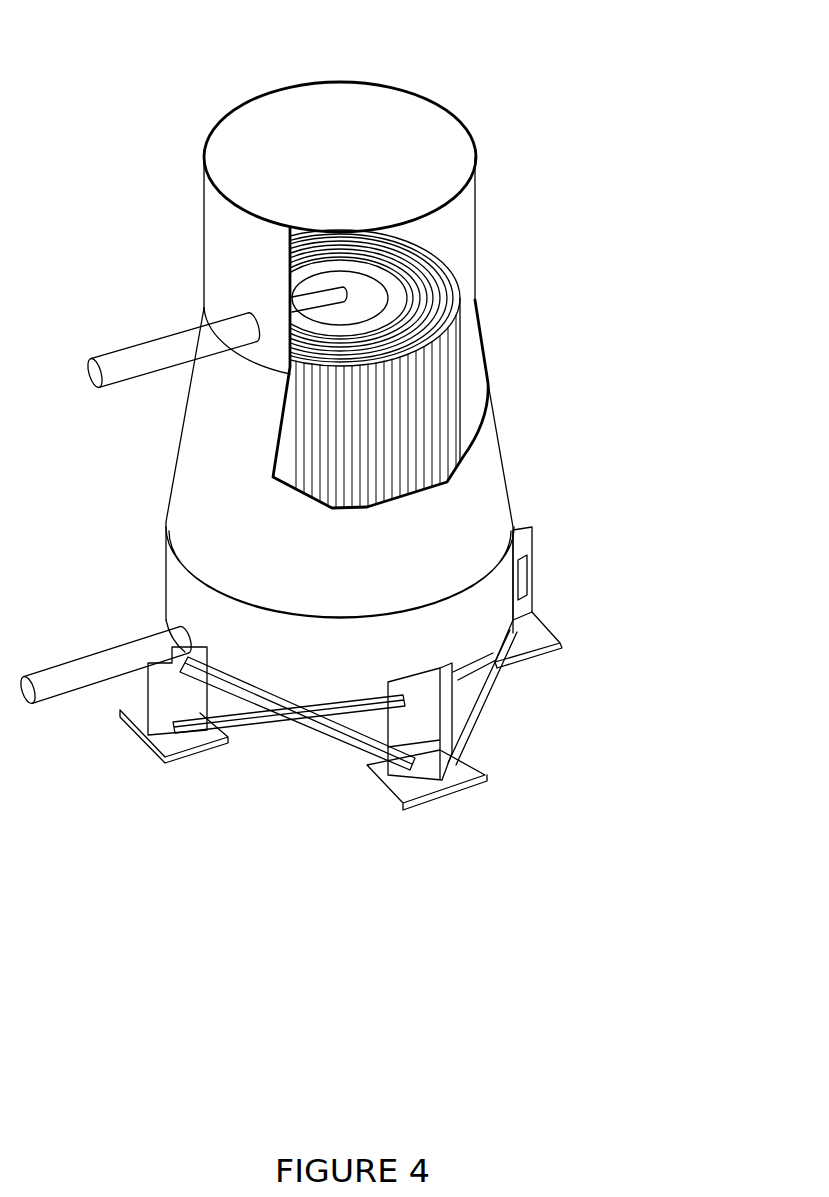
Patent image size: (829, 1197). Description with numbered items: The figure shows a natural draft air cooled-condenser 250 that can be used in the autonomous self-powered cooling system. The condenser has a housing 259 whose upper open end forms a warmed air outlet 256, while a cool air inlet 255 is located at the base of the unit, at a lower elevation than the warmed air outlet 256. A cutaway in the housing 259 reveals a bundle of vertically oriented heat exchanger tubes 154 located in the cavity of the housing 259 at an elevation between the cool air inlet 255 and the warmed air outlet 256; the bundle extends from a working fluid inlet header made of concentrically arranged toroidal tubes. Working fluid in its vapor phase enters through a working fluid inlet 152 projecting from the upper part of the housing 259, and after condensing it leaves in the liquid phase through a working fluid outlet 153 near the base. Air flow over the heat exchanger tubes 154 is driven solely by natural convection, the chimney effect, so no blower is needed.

The natural draft air cooled-condenser 250 is at (645, 100).
The warmed air outlet 256 is at (367, 103).
The housing 259 is at (473, 483).
The heat exchanger tubes 154 is at (440, 353).
The working fluid inlet 152 is at (133, 355).
The working fluid outlet 153 is at (133, 650).
The cool air inlet 255 is at (330, 707).